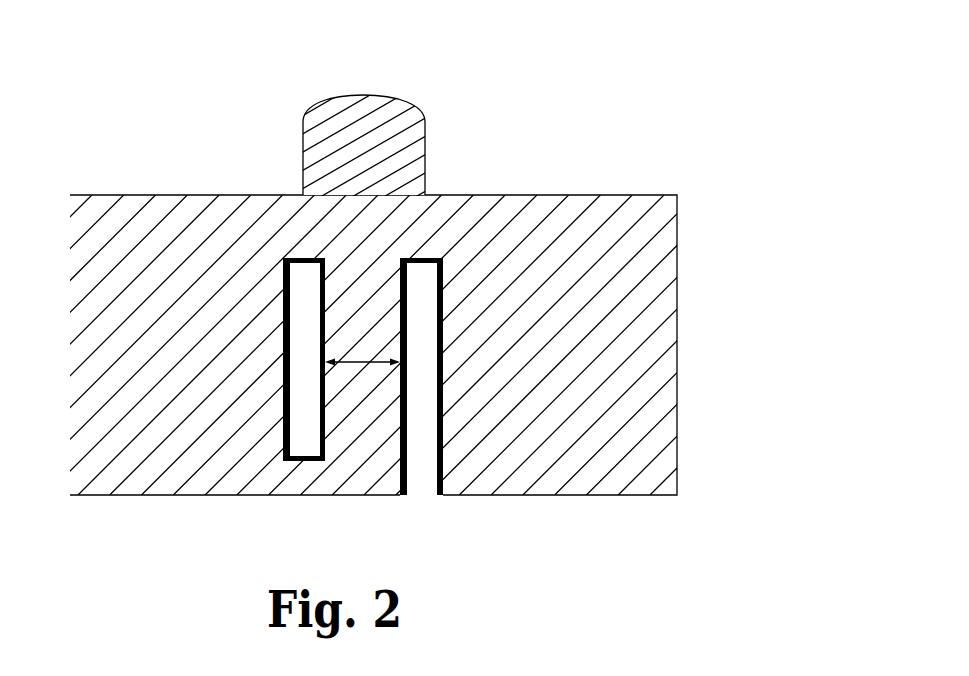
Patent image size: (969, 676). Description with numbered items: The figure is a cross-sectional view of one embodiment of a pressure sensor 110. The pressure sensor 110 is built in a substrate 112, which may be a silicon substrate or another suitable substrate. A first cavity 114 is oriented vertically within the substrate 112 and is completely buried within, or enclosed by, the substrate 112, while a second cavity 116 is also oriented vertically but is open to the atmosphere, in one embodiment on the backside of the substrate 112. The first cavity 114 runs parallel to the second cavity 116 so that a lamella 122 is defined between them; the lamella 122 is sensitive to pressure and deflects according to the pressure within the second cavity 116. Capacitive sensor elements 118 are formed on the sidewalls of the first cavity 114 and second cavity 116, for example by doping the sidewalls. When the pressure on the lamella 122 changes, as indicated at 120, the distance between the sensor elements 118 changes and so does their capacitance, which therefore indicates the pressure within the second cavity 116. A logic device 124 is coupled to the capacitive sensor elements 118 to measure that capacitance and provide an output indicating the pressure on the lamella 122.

The pressure sensor 110 is at (532, 48).
The substrate 112 is at (677, 345).
The first cavity 114 is at (300, 463).
The second cavity 116 is at (420, 448).
The capacitive sensor elements 118 is at (294, 284).
The change in pressure on lamella 120 is at (361, 364).
The lamella 122 is at (338, 407).
The logic device 124 is at (426, 150).